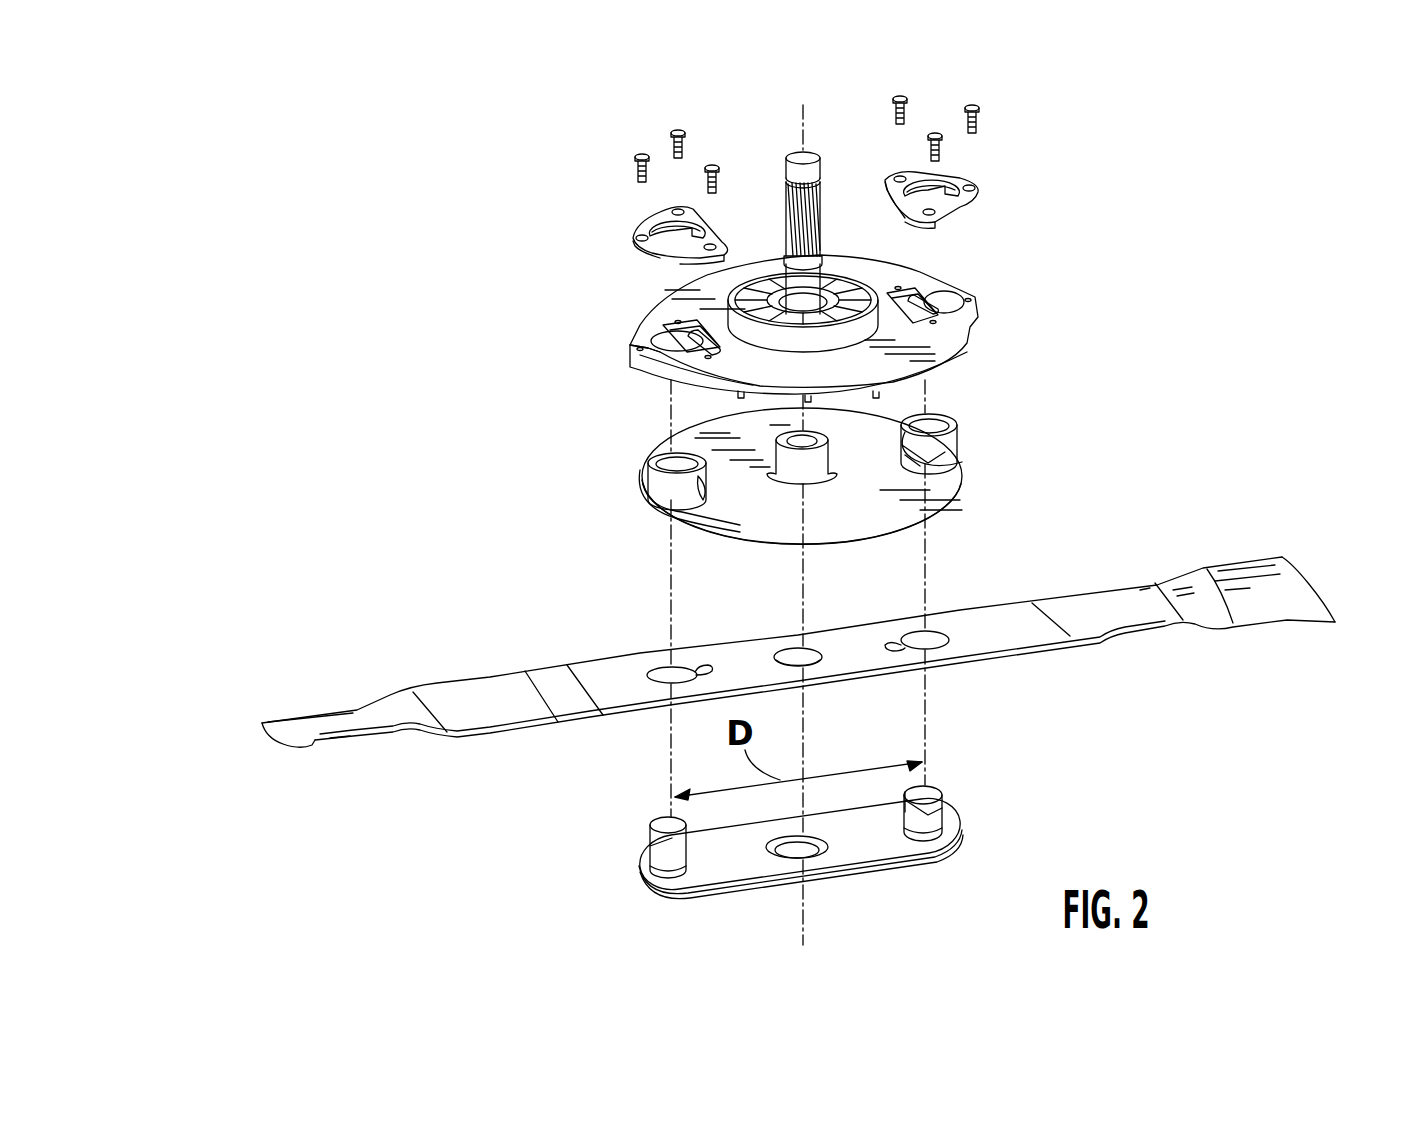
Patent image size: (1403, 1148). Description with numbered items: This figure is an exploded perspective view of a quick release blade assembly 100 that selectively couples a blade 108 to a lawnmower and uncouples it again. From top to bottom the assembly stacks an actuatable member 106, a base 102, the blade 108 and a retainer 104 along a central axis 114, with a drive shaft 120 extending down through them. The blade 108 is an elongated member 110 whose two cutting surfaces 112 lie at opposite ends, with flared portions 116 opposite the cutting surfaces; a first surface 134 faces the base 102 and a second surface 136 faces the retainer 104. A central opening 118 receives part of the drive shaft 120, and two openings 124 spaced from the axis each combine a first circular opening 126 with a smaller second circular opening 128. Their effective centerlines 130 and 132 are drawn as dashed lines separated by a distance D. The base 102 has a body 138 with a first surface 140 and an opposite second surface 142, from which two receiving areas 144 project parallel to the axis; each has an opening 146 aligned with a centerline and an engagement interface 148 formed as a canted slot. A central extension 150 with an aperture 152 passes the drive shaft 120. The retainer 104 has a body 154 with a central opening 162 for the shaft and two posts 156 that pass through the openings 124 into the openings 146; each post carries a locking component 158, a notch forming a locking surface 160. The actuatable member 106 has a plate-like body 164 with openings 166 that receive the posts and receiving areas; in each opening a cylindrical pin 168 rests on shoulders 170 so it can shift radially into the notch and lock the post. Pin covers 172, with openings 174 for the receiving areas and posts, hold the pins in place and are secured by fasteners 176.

The quick release blade assembly 100 is at (498, 160).
The base 102 is at (965, 462).
The retainer 104 is at (958, 838).
The actuatable member 106 is at (976, 316).
The blade 108 is at (458, 740).
The elongated member 110 is at (500, 690).
The cutting surfaces 112 is at (300, 724).
The central axis 114 is at (808, 907).
The flared portions 116 is at (365, 742).
The central opening 118 is at (788, 650).
The drive shaft 120 is at (788, 172).
The openings 124 is at (660, 668).
The first circular opening 126 is at (935, 635).
The second circular opening 128 is at (888, 645).
The centerline 130 is at (669, 768).
The centerline 132 is at (923, 712).
The first surface 134 is at (1117, 600).
The second surface 136 is at (1115, 650).
The body 138 is at (650, 508).
The first surface 140 is at (960, 512).
The second surface 142 is at (697, 443).
The receiving areas 144 is at (650, 472).
The openings 146 is at (677, 460).
The engagement interface 148 is at (702, 500).
The extension 150 is at (800, 460).
The aperture 152 is at (800, 436).
The body 154 is at (718, 888).
The posts 156 is at (655, 846).
The locking component 158 is at (690, 852).
The locking surface 160 is at (675, 866).
The opening 162 is at (783, 853).
The body 164 is at (648, 362).
The openings 166 is at (640, 346).
The pins 168 is at (705, 343).
The shoulders 170 is at (668, 336).
The pin covers 172 is at (640, 238).
The openings 174 is at (658, 222).
The fasteners 176 is at (712, 165).